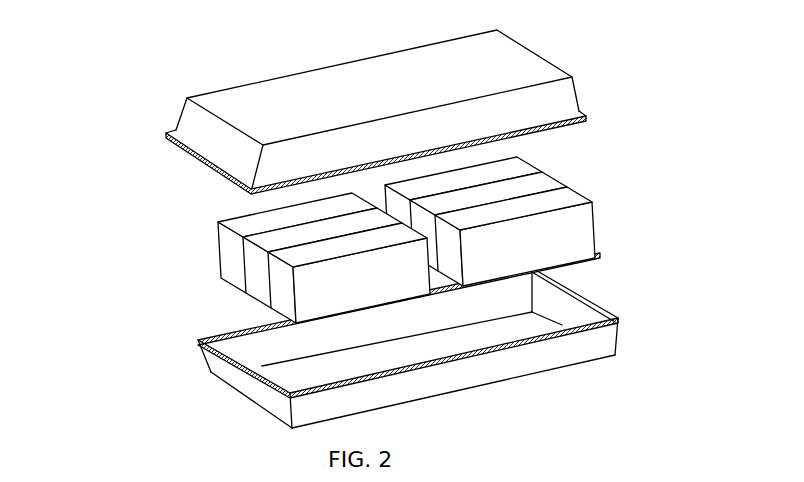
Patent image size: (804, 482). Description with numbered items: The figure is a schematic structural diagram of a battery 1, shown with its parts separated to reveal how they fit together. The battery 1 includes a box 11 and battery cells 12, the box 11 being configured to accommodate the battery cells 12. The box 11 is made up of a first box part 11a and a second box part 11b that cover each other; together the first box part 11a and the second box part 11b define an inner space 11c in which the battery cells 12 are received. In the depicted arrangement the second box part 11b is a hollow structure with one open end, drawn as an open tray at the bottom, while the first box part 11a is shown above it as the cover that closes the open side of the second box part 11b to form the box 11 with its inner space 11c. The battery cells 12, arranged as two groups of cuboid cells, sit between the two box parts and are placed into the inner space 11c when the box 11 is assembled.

The battery 1 is at (361, 222).
The box 11 is at (342, 229).
The first box part 11a is at (222, 157).
The second box part 11b is at (232, 378).
The inner space 11c is at (522, 328).
The battery cells 12 is at (568, 230).